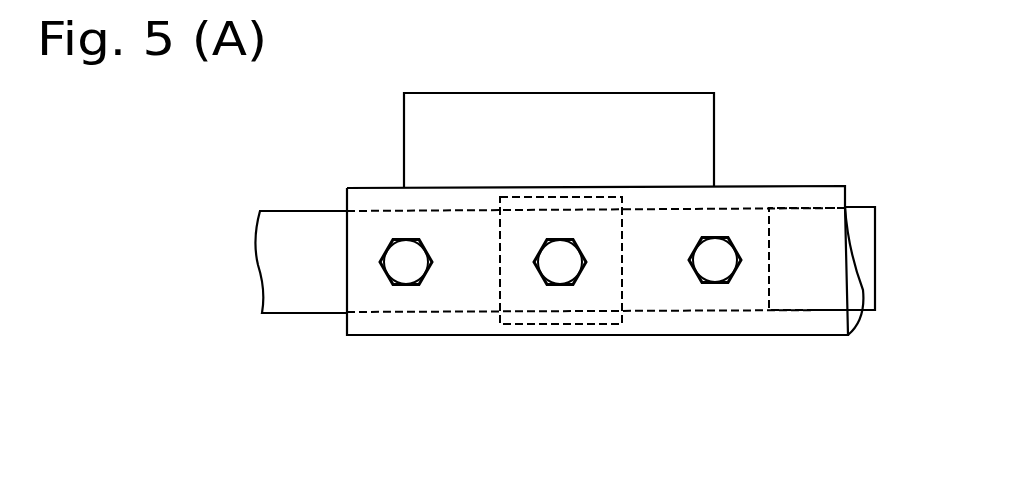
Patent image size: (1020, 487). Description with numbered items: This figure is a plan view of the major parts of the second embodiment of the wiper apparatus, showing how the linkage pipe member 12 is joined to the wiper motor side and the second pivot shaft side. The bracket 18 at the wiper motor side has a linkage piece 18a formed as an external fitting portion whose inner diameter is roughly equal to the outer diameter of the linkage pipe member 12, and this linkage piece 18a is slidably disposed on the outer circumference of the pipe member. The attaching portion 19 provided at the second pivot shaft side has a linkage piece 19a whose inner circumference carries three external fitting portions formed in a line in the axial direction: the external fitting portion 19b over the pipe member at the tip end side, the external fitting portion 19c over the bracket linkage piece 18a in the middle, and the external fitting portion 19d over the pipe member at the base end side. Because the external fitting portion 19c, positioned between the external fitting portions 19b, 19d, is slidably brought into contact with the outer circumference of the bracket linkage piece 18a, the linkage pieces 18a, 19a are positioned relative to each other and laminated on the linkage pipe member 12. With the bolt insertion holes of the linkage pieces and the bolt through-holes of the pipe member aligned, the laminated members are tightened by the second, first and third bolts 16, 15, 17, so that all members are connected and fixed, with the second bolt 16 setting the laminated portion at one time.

The linkage pipe member 12 is at (302, 222).
The first bolt 15 is at (406, 268).
The second bolt 16 is at (566, 270).
The third bolt 17 is at (718, 270).
The bracket 18 is at (653, 113).
The linkage piece 18a is at (563, 324).
The attaching portion 19 is at (803, 232).
The linkage piece 19a is at (745, 295).
The external fitting portion 19b is at (468, 295).
The external fitting portion 19c is at (522, 293).
The external fitting portion 19d is at (682, 240).